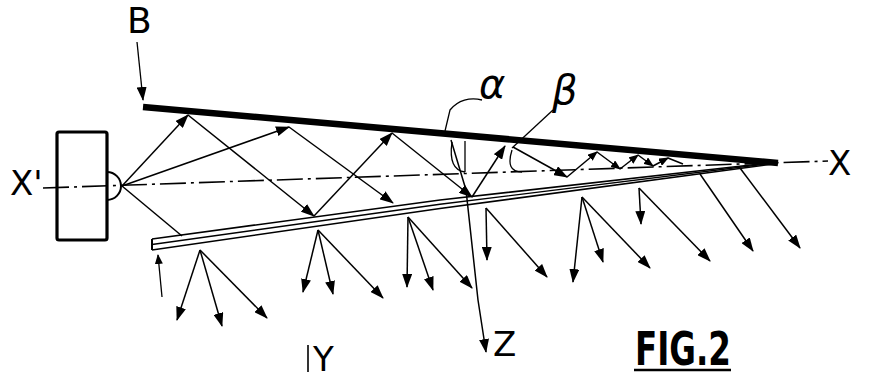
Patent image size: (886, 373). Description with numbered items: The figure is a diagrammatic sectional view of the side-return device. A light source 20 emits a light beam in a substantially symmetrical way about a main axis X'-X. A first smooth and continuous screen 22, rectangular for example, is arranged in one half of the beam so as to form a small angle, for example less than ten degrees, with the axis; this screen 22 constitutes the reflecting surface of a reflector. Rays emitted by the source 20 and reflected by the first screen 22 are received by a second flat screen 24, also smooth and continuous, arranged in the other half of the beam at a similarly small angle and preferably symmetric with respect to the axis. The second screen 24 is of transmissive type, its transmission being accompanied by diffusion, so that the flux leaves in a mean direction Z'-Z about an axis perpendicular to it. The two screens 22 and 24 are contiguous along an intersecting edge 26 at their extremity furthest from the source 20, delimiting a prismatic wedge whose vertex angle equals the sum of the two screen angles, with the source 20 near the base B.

The light source 20 is at (122, 204).
The first screen 22 is at (235, 108).
The second screen 24 is at (174, 254).
The intersecting edge 26 is at (780, 160).